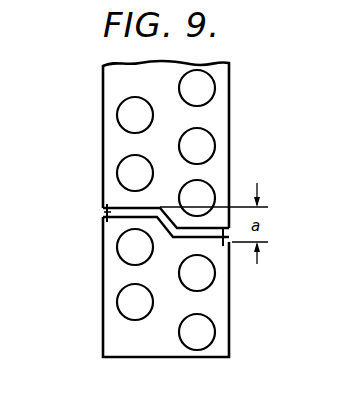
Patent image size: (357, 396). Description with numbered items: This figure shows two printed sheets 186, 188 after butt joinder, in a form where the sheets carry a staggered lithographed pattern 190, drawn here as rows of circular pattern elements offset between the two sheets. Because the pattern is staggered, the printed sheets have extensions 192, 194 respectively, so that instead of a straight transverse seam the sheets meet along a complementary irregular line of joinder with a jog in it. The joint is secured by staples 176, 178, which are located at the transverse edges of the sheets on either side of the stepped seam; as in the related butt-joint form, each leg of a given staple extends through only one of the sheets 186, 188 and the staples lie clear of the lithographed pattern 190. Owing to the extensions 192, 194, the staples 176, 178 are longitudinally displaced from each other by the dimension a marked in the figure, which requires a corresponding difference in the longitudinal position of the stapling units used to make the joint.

The staple 176 is at (226, 243).
The staple 178 is at (105, 217).
The sheet 186 is at (231, 118).
The sheet 188 is at (101, 287).
The staggered lithographed pattern 190 is at (215, 84).
The extension 192 is at (232, 222).
The extension 194 is at (113, 228).